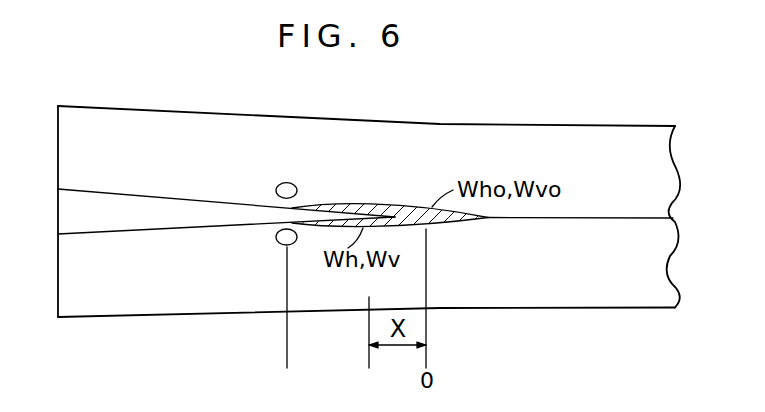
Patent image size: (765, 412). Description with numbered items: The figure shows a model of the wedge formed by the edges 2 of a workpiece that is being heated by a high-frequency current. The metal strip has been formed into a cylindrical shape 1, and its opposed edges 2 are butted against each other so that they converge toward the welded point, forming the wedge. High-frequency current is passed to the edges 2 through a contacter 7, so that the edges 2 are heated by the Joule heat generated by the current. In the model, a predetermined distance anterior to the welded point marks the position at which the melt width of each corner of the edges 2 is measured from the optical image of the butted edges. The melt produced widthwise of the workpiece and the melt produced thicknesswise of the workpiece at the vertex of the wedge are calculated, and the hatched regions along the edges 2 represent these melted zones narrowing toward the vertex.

The cylindrical shape 1 is at (83, 105).
The edges 2 is at (77, 191).
The contacter 7 is at (280, 189).